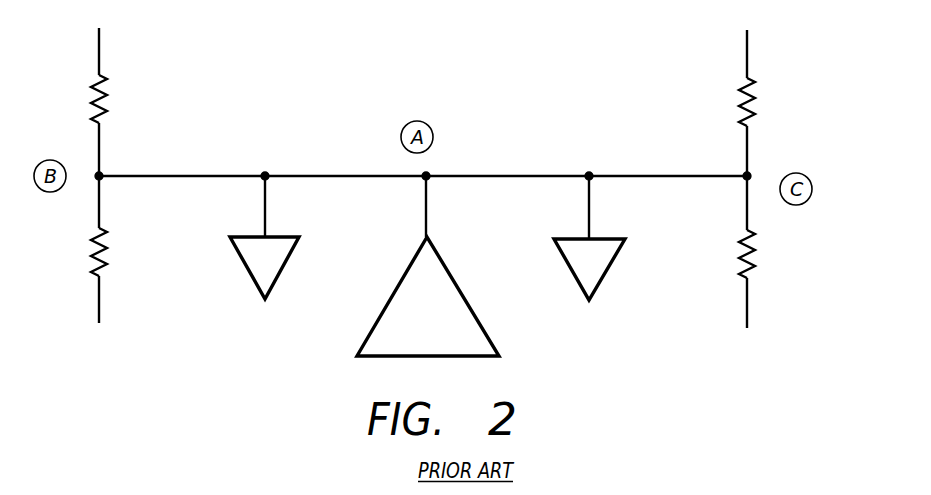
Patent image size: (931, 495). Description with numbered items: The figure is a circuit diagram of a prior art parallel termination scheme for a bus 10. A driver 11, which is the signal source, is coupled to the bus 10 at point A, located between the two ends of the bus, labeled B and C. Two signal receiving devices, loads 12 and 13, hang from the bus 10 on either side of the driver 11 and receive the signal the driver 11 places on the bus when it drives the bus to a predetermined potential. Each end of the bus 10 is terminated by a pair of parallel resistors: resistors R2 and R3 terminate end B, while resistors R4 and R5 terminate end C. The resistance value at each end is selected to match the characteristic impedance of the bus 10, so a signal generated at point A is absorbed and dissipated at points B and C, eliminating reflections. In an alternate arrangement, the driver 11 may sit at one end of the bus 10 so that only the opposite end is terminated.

The bus 10 is at (468, 176).
The driver 11 is at (392, 293).
The load 12 is at (243, 269).
The load 13 is at (610, 271).
The parallel resistor R2 is at (104, 103).
The parallel resistor R3 is at (104, 257).
The parallel resistor R4 is at (752, 106).
The parallel resistor R5 is at (752, 260).